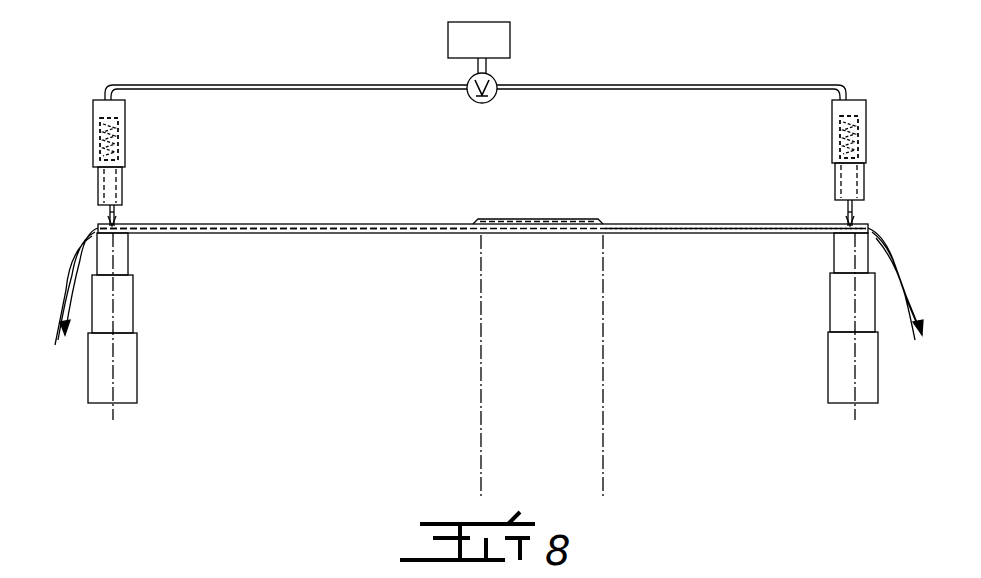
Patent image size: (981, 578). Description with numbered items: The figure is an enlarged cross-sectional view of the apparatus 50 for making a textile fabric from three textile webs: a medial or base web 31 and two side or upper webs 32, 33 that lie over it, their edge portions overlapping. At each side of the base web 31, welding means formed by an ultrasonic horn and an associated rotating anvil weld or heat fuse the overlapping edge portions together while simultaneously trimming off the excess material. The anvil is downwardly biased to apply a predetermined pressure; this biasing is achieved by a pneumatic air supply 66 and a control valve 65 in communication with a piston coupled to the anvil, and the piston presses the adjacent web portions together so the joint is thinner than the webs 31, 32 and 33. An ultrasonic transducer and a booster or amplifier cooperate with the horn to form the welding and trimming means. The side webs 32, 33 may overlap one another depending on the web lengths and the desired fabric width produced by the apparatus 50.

The apparatus 50 is at (698, 60).
The base web 31 is at (515, 233).
The side web 32 is at (548, 219).
The side web 33 is at (395, 224).
The control valve 65 is at (487, 103).
The pneumatic air supply 66 is at (510, 45).